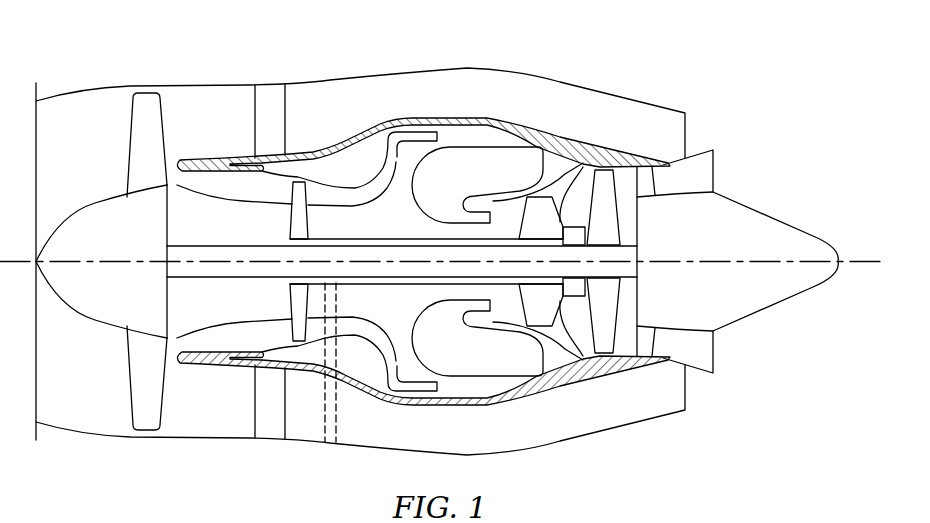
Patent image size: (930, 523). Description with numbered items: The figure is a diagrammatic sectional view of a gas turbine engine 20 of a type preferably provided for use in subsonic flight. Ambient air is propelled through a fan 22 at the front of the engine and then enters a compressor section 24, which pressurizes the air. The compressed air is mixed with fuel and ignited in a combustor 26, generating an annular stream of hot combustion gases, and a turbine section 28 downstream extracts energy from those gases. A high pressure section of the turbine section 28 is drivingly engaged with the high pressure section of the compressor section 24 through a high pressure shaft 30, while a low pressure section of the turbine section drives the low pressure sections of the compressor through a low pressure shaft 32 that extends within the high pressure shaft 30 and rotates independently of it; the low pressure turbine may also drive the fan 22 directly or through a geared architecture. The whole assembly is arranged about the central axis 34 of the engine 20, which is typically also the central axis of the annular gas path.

The gas turbine engine 20 is at (709, 80).
The fan 22 is at (125, 151).
The compressor section 24 is at (317, 168).
The combustor 26 is at (475, 160).
The turbine section 28 is at (569, 197).
The high pressure shaft 30 is at (323, 233).
The low pressure shaft 32 is at (258, 246).
The central axis 34 is at (858, 263).